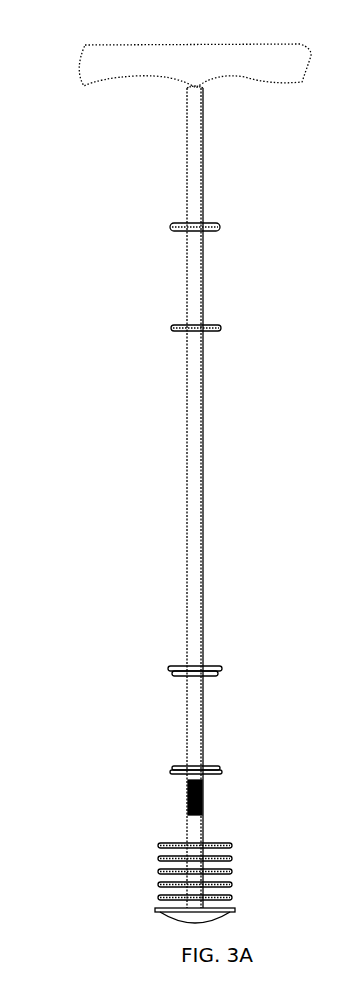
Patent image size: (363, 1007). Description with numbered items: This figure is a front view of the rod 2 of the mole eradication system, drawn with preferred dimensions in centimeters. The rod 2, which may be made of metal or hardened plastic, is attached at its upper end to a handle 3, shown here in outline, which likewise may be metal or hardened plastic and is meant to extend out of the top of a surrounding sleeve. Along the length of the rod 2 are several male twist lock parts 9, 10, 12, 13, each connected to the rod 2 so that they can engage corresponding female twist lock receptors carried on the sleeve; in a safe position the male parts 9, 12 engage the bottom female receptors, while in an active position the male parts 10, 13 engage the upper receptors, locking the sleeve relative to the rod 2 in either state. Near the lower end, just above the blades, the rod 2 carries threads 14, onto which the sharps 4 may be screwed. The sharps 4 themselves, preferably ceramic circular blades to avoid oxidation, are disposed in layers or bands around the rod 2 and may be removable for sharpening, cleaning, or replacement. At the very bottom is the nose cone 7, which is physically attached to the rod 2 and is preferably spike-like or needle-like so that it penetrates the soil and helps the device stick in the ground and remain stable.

The rod 2 is at (186, 535).
The handle 3 is at (76, 79).
The sharps 4 is at (157, 861).
The nose cone 7 is at (156, 910).
The male twist lock part 9 is at (171, 773).
The male twist lock part 10 is at (169, 666).
The male twist lock part 12 is at (171, 329).
The male twist lock part 13 is at (172, 229).
The threads 14 is at (187, 803).